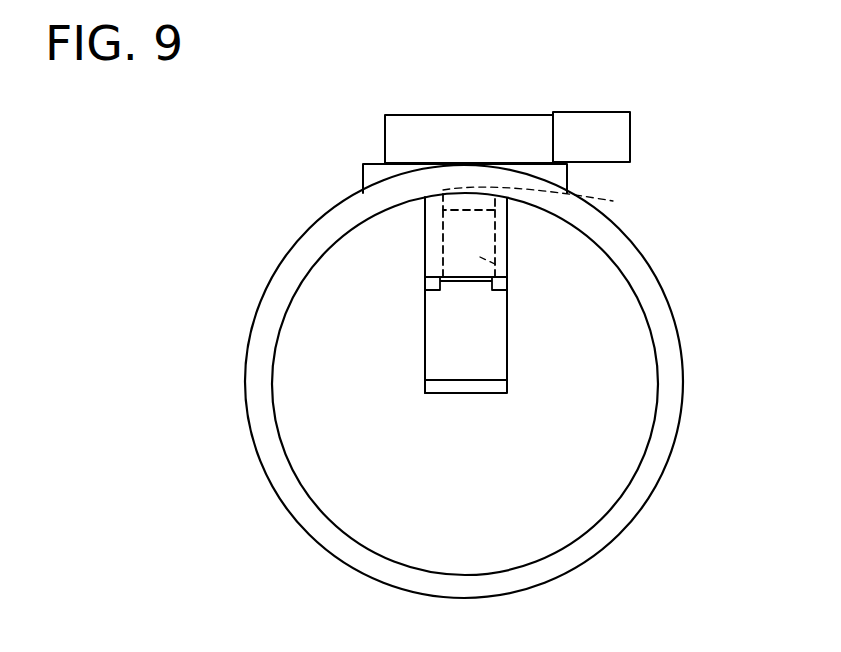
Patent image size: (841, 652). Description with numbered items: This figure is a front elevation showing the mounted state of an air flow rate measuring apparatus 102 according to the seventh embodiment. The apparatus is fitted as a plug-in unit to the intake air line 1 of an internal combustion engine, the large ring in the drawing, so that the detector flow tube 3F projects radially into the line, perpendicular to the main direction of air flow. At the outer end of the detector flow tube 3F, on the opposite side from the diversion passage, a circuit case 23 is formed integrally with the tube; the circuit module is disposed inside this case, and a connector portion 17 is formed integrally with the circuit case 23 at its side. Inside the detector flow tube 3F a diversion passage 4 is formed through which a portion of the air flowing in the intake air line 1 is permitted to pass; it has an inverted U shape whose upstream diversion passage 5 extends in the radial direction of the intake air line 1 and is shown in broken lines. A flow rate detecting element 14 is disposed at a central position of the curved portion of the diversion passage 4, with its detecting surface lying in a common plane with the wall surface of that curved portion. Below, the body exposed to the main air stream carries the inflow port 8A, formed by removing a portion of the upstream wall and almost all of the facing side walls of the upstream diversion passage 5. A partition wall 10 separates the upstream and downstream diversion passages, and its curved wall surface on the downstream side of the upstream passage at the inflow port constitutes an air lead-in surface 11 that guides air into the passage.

The coupling assembly 102 is at (337, 85).
The intake air line 1 is at (685, 367).
The circuit case 23 is at (383, 139).
The connector portion 17 is at (638, 145).
The flow rate detecting element 14 is at (507, 189).
The detector flow tube 3F is at (422, 243).
The diversion passage 4 is at (492, 237).
The upstream diversion passage 5 is at (497, 265).
The inflow port 8A is at (450, 325).
The air lead-in surface 11 is at (500, 360).
The partition wall 10 is at (500, 400).